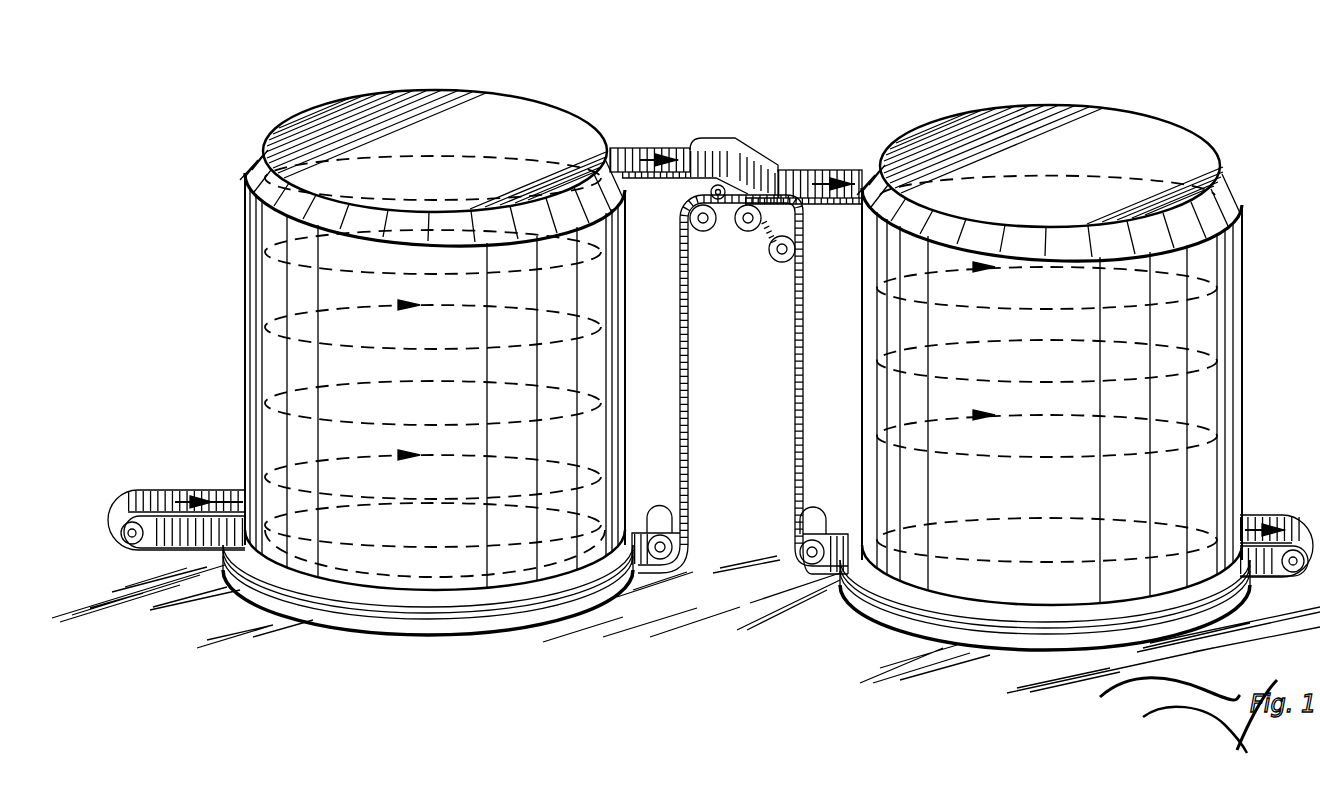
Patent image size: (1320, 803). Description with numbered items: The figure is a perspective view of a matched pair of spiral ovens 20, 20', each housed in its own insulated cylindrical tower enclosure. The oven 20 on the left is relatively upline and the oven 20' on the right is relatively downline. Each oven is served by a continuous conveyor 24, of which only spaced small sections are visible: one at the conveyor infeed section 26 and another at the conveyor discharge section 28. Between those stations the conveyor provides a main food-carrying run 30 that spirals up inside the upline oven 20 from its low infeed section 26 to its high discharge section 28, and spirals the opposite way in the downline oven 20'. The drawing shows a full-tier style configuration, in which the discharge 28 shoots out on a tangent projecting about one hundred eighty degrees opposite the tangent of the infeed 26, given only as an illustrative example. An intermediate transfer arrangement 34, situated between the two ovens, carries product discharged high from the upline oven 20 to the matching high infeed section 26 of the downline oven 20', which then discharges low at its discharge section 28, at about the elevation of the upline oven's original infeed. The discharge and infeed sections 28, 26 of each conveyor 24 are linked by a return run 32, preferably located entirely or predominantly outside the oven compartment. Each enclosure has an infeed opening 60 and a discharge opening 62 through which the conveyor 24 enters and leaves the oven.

The spiral oven 20 is at (428, 338).
The spiral oven 20' is at (1041, 354).
The conveyor 24 is at (337, 507).
The main food-carrying run 30 is at (958, 461).
The conveyor infeed section 26 is at (163, 476).
The conveyor discharge section 28 is at (646, 181).
The return run 32 is at (688, 470).
The intermediate transfer arrangement 34 is at (796, 131).
The infeed opening 60 is at (217, 478).
The discharge opening 62 is at (644, 158).